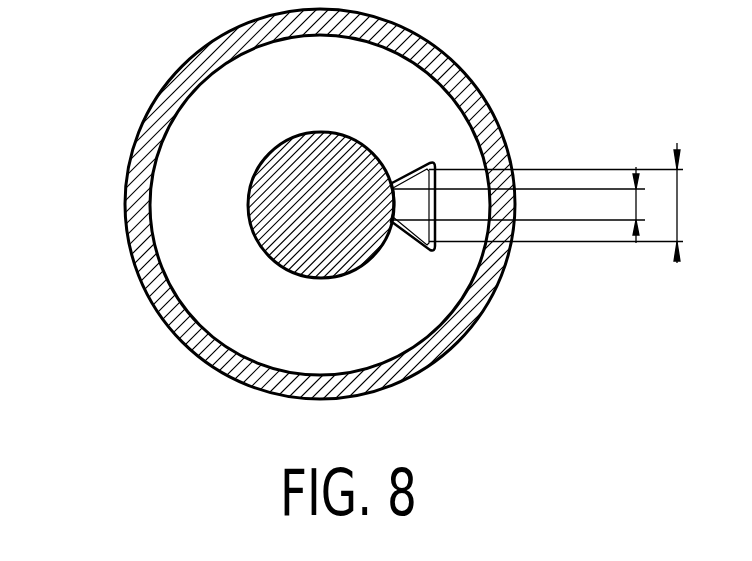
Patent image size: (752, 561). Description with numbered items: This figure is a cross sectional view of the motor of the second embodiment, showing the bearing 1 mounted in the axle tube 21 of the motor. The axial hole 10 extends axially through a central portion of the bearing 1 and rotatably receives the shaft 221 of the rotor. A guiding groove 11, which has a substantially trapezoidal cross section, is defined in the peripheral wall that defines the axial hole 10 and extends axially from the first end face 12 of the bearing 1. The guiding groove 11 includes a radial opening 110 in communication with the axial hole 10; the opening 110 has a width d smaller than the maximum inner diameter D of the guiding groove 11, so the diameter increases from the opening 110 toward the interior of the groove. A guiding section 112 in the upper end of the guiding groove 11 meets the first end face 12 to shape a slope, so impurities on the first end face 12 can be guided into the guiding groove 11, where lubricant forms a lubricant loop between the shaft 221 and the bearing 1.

The bearing 1 is at (376, 210).
The first end face 12 is at (218, 175).
The axial hole 10 is at (348, 235).
The guiding groove 11 is at (414, 203).
The guiding section 112 is at (437, 219).
The opening 110 is at (398, 223).
The axle tube 21 is at (457, 340).
The shaft 221 is at (275, 263).